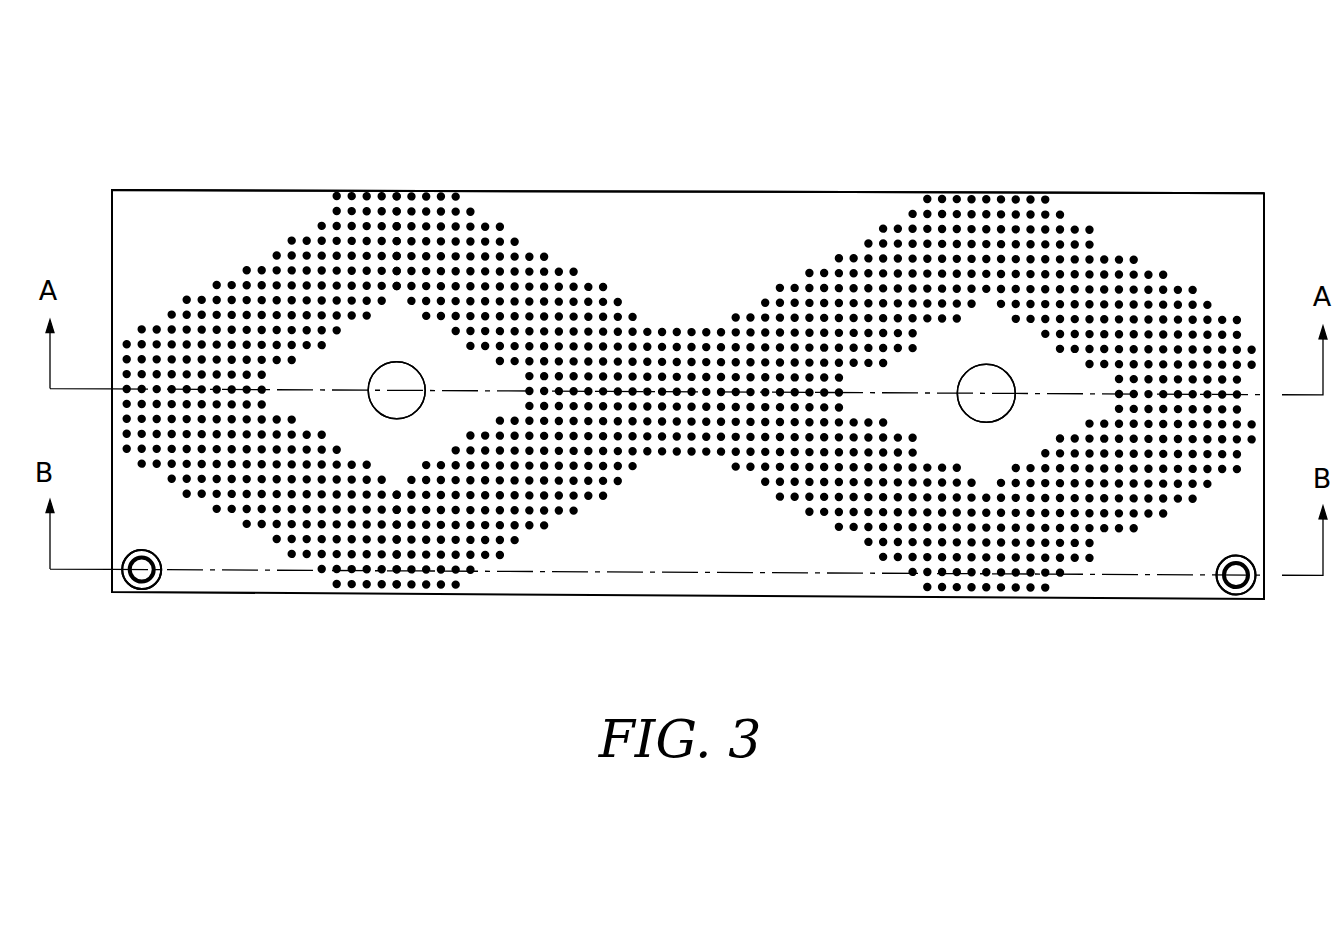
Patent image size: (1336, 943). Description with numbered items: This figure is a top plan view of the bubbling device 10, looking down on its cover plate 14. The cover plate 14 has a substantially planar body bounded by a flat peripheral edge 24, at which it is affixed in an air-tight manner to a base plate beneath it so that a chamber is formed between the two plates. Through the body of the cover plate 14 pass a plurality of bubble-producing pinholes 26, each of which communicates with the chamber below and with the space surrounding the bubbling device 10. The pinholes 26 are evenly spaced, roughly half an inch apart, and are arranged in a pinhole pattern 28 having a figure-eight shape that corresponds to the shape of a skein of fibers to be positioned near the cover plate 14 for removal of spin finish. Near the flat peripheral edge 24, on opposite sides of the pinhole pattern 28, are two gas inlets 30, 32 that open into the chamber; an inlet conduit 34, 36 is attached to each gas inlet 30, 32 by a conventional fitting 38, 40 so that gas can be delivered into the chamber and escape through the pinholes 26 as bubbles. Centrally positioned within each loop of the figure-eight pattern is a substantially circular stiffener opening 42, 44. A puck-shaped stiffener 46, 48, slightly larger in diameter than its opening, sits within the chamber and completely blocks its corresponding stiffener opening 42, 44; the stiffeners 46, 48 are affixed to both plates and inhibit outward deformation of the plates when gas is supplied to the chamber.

The bubbling device 10 is at (606, 104).
The cover plate 14 is at (165, 203).
The flat peripheral edge 24 is at (198, 190).
The pinholes 26 is at (379, 190).
The pinhole pattern 28 is at (816, 246).
The gas inlet 30 is at (121, 574).
The gas inlet 32 is at (1236, 580).
The inlet conduit 34 is at (142, 575).
The inlet conduit 36 is at (1251, 580).
The fitting 38 is at (140, 587).
The fitting 40 is at (1216, 574).
The stiffener opening 42 is at (399, 360).
The stiffener opening 44 is at (980, 361).
The stiffener 46 is at (400, 376).
The stiffener 48 is at (987, 373).